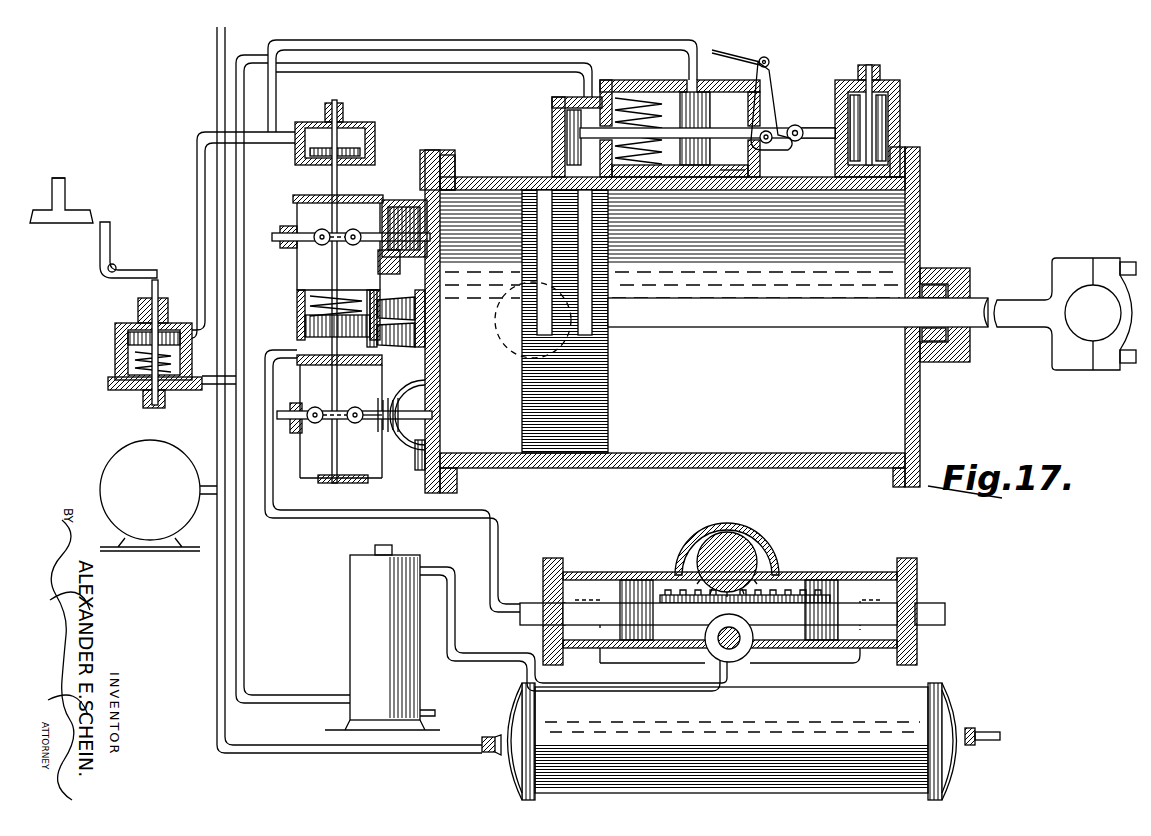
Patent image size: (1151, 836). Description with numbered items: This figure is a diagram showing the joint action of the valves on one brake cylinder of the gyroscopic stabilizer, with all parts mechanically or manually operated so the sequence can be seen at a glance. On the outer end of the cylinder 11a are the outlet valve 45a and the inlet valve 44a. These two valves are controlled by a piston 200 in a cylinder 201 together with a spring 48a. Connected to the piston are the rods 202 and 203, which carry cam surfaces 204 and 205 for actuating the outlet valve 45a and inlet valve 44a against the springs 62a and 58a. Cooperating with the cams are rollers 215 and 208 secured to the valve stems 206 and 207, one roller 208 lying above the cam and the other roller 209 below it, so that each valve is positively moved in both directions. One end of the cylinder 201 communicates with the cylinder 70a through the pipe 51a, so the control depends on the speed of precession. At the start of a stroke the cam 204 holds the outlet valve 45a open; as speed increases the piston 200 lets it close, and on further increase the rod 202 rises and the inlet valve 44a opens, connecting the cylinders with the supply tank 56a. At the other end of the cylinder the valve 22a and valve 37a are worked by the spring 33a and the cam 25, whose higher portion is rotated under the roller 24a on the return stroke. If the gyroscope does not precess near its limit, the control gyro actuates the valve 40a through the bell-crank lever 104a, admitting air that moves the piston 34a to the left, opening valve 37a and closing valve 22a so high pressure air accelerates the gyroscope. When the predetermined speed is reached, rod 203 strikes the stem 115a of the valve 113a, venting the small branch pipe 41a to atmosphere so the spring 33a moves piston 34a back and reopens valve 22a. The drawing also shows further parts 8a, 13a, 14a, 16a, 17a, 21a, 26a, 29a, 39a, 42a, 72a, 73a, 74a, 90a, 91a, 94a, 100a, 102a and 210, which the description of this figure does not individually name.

The drive pinion 8a is at (738, 538).
The cylinder 11a is at (672, 320).
The coupling yoke 13a is at (1065, 314).
The piston passage 14a is at (522, 324).
The piston 16a is at (609, 377).
The piston rod 17a is at (798, 312).
The cylinder head 21a is at (920, 198).
The valve 22a is at (898, 117).
The roller 24a is at (800, 125).
The cam 25 is at (775, 145).
The lever 26a is at (779, 84).
The arm 29a is at (768, 50).
The spring 33a is at (640, 95).
The piston 34a is at (683, 92).
The valve 37a is at (567, 127).
The pipe 39a is at (437, 63).
The valve 40a is at (115, 350).
The small branch pipe 41a is at (512, 40).
The lever 42a is at (60, 176).
The inlet valve 44a is at (424, 178).
The outlet valve 45a is at (440, 428).
The spring 48a is at (396, 311).
The pipe 51a is at (400, 516).
The supply tank 56a is at (741, 741).
The spring 58a is at (380, 261).
The spring 62a is at (392, 398).
The cylinder 70a is at (590, 568).
The pump piston 72a is at (640, 578).
The shaft 73a is at (745, 638).
The rack 74a is at (780, 578).
The gauge 90a is at (138, 443).
The pipe 91a is at (218, 626).
The accumulator 94a is at (352, 660).
The pipe 100a is at (245, 583).
The lever 102a is at (90, 212).
The bell-crank lever 104a is at (100, 240).
The valve 113a is at (300, 158).
The stem 115a is at (337, 174).
The piston 200 is at (305, 326).
The cylinder 201 is at (300, 299).
The rod 202 is at (340, 465).
The rod 203 is at (328, 196).
The cam surface 204 is at (336, 432).
The cam surface 205 is at (385, 212).
The valve stem 206 is at (500, 257).
The valve stem 207 is at (364, 403).
The roller 208 is at (354, 416).
The roller 209 is at (367, 434).
The port 210 is at (737, 177).
The roller 215 is at (351, 246).